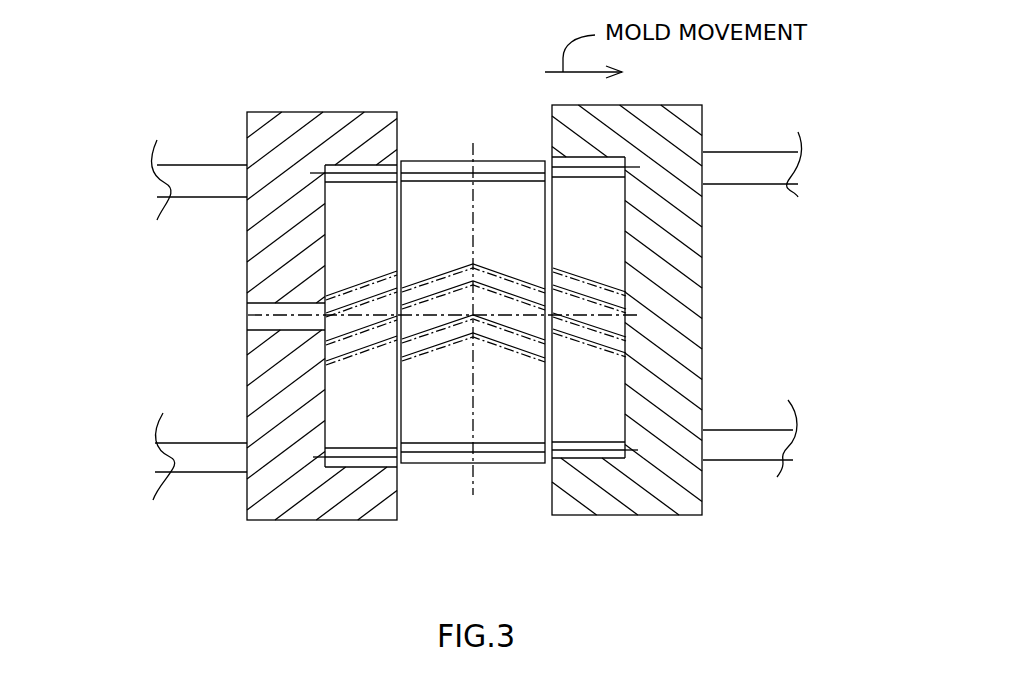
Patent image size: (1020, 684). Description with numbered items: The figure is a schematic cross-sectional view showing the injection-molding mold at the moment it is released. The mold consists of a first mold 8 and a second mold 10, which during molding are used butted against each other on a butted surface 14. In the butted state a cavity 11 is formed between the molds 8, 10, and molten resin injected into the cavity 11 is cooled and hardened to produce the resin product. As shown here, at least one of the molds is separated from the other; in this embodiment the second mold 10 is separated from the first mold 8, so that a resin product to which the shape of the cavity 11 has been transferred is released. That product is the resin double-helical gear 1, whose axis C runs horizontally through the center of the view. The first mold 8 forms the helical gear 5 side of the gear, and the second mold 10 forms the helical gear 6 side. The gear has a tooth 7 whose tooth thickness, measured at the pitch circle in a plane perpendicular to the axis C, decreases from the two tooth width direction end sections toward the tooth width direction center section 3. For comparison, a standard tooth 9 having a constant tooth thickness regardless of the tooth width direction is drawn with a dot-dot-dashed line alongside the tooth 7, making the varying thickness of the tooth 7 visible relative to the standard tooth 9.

The resin double-helical gear 1 is at (450, 155).
The tooth width direction center section 3 is at (474, 158).
The helical gear 5 is at (418, 210).
The helical gear 6 is at (523, 207).
The tooth 7 is at (495, 159).
The first mold 8 is at (262, 120).
The standard tooth 9 is at (482, 262).
The second mold 10 is at (692, 105).
The cavity 11 is at (325, 413).
The butted surface 14 is at (397, 132).
The axis C is at (570, 314).